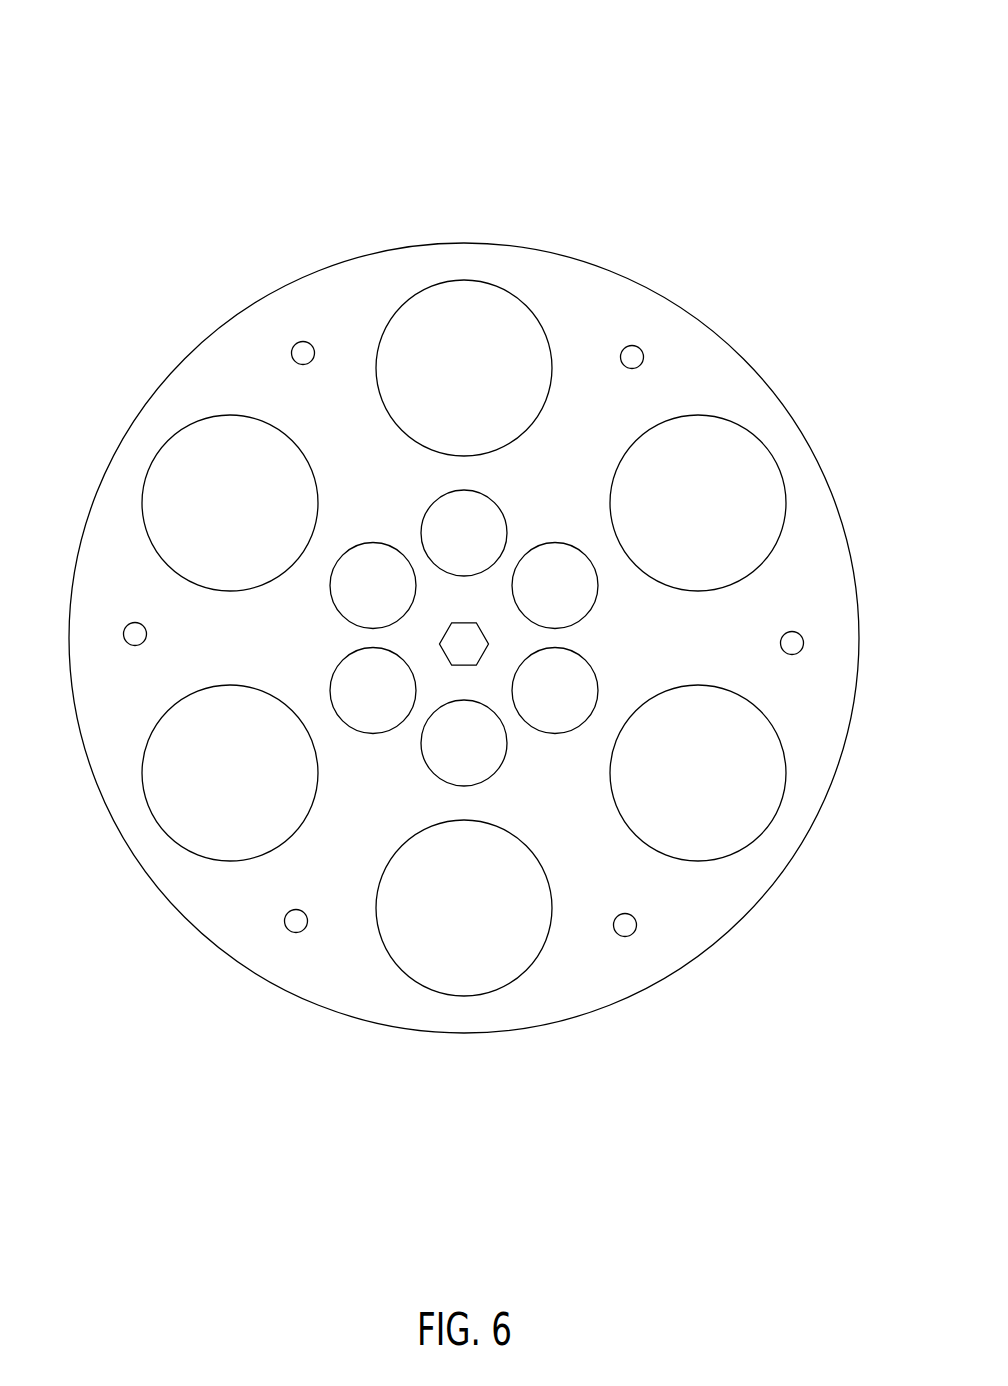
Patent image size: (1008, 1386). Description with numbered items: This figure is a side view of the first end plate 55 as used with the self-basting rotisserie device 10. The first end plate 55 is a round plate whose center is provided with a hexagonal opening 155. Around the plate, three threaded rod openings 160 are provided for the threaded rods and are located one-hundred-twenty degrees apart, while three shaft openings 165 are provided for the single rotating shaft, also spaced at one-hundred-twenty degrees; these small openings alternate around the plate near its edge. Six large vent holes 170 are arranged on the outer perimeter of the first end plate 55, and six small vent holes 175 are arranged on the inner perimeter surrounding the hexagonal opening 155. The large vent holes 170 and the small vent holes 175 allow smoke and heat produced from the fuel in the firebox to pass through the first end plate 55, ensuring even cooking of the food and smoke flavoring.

The device 10 is at (187, 181).
The first end plate 55 is at (804, 607).
The hexagonal opening 155 is at (452, 623).
The threaded rod openings 160 is at (640, 348).
The shaft openings 165 is at (292, 346).
The large vent holes 170 is at (438, 283).
The small vent holes 175 is at (497, 503).